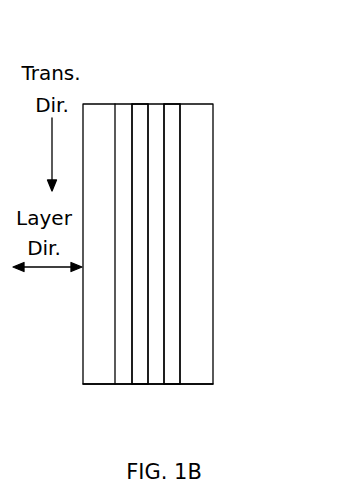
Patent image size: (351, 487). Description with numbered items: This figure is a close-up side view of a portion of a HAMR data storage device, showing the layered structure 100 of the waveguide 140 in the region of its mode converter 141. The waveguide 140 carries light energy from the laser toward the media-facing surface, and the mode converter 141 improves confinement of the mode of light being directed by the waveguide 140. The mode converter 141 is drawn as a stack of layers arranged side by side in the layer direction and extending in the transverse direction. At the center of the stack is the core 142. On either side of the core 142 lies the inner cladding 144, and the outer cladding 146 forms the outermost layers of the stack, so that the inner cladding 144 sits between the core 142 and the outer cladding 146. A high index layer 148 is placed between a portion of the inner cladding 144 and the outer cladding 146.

The optical film / layered article 100 is at (87, 35).
The waveguide 140 is at (123, 248).
The mode converter 141 is at (140, 430).
The core 142 is at (138, 104).
The inner cladding 144 is at (153, 384).
The outer cladding 146 is at (82, 362).
The high index layer 148 is at (173, 104).